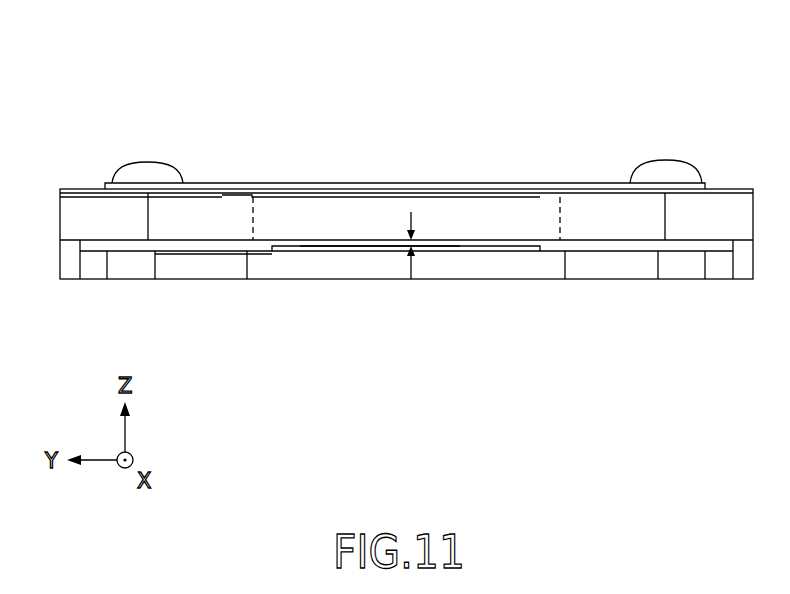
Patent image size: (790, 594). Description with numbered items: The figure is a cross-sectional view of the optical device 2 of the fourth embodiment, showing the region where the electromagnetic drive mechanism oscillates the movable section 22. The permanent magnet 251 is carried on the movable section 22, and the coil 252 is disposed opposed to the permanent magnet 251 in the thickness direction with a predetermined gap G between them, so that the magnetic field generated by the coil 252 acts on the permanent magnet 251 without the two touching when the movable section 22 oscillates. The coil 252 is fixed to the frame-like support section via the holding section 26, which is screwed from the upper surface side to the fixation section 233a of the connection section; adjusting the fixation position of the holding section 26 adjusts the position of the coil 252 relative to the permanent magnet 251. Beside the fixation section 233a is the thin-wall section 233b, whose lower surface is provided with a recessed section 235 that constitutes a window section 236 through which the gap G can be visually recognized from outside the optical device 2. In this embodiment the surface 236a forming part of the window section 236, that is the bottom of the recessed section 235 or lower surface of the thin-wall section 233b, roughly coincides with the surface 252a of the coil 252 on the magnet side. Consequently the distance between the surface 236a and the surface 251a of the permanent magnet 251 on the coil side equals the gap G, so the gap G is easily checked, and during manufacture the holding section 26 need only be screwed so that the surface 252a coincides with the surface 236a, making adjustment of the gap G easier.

The optical device 2 is at (672, 77).
The holding section 26 is at (310, 183).
The fixation section 233a is at (85, 189).
The thin-wall section 233b is at (432, 212).
The coil 252 is at (530, 230).
The surface of the permanent magnet 251a is at (377, 244).
The surface of the coil 252a is at (483, 240).
The gap G is at (408, 246).
The movable section 22 is at (359, 264).
The permanent magnet 251 is at (447, 251).
The surface constituting the window section 236a is at (500, 241).
The window section 236 is at (575, 251).
The recessed section 235 is at (620, 240).